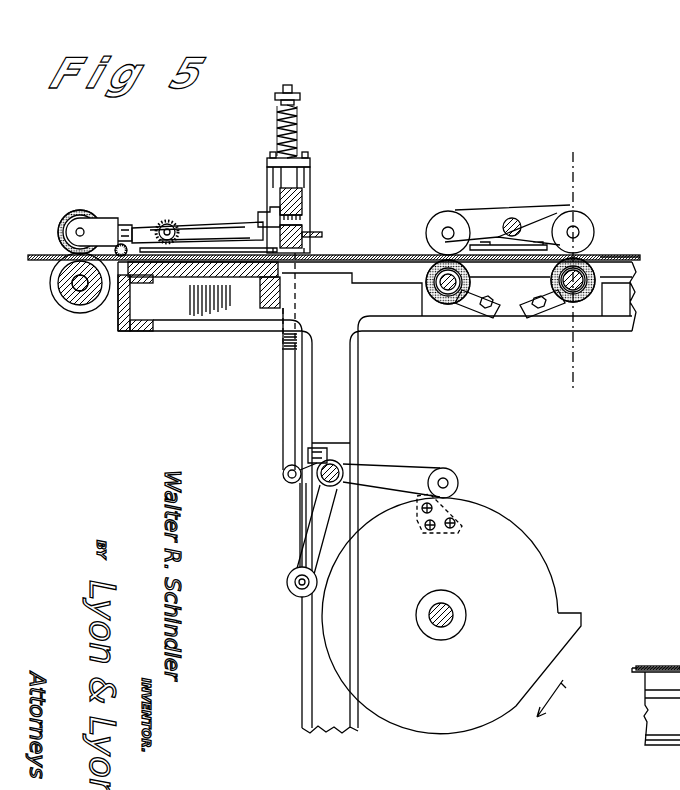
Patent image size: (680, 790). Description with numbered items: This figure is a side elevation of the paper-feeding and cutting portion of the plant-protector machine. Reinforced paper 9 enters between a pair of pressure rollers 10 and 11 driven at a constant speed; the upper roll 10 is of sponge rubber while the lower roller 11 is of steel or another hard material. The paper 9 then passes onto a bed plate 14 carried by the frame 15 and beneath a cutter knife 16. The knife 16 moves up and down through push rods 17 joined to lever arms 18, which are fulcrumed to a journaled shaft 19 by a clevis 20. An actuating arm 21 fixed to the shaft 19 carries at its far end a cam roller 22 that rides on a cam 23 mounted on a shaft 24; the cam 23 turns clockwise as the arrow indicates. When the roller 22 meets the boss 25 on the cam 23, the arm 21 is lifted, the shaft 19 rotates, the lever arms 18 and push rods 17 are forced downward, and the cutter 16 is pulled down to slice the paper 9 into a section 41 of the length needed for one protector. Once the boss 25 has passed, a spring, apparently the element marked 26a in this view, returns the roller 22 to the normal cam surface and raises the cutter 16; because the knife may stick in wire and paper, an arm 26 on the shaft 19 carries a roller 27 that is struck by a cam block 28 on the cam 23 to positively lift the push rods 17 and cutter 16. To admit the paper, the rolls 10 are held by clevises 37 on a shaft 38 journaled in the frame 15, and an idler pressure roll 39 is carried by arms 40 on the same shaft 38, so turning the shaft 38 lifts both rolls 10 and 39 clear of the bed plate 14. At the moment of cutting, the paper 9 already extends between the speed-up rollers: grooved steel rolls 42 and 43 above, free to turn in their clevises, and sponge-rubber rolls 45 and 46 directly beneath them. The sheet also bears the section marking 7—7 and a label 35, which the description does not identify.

The section line 7- 7 is at (562, 172).
The reinforced paper 9 is at (44, 256).
The pressure rollers 10 is at (81, 212).
The pressure rollers 11 is at (92, 295).
The bed plate 14 is at (187, 267).
The frame 15 is at (251, 332).
The cutter knife 16 is at (283, 232).
The push rods 17 is at (290, 405).
The lever arms 18 is at (297, 487).
The journaled shaft 19 is at (338, 467).
The clevis 20 is at (350, 492).
The actuating arm 21 is at (397, 477).
The cam roller 22 is at (452, 480).
The cam 23 is at (517, 540).
The shaft 24 is at (435, 630).
The boss 25 is at (582, 622).
The arm 26 is at (305, 558).
The spring 26a is at (296, 138).
The roller 27 is at (292, 597).
The cam block 28 is at (457, 507).
The lever arm 35 is at (108, 223).
The clevises 37 is at (88, 225).
The shaft 38 is at (177, 223).
The idler pressure roll 39 is at (124, 244).
The arms 40 is at (148, 232).
The sections 41 is at (640, 255).
The speed-up roller 42 is at (441, 211).
The speed-up roller 43 is at (596, 218).
The speed-up roll 45 is at (450, 303).
The speed-up roll 46 is at (582, 303).